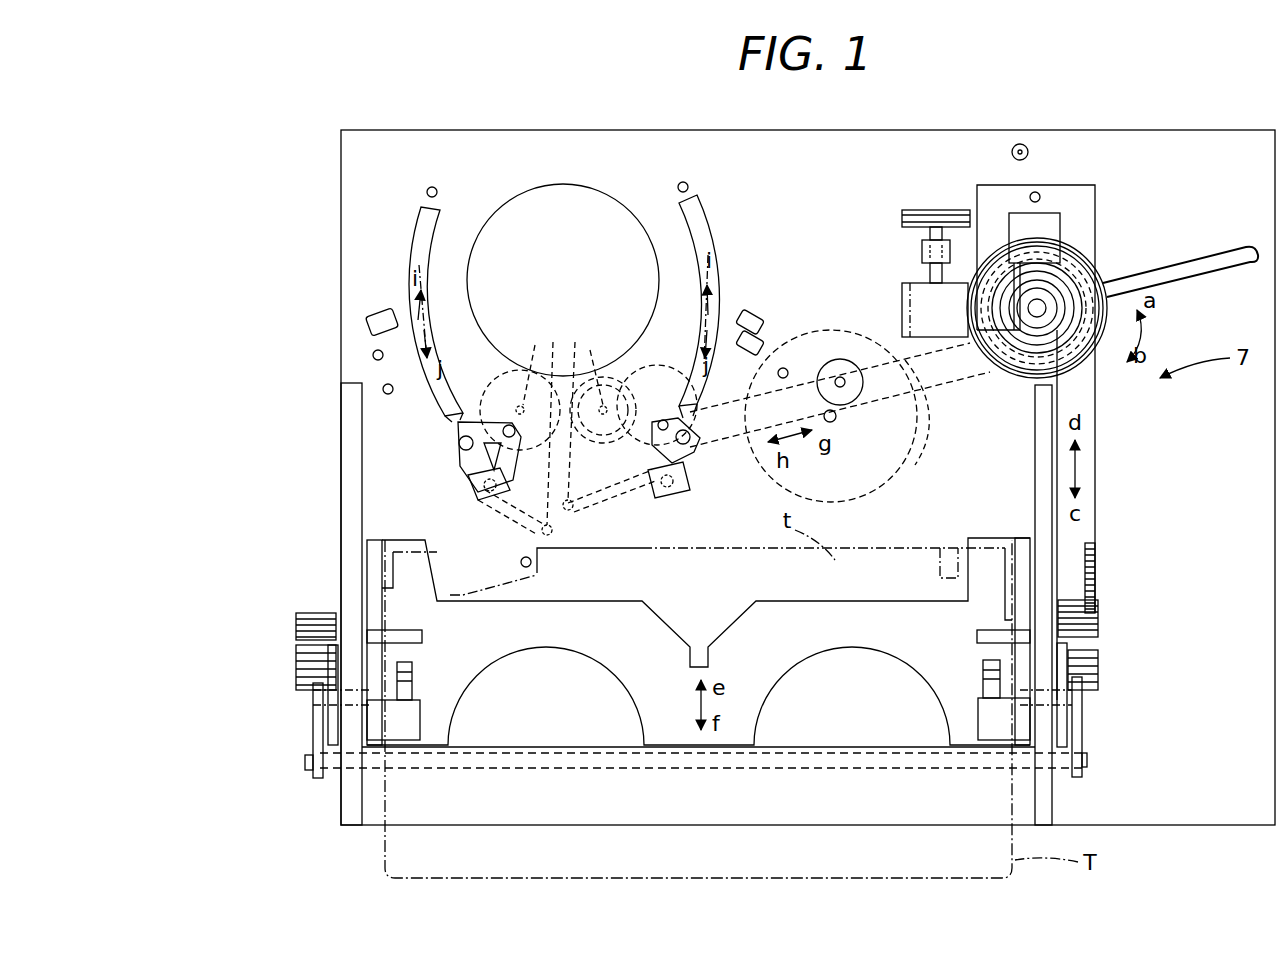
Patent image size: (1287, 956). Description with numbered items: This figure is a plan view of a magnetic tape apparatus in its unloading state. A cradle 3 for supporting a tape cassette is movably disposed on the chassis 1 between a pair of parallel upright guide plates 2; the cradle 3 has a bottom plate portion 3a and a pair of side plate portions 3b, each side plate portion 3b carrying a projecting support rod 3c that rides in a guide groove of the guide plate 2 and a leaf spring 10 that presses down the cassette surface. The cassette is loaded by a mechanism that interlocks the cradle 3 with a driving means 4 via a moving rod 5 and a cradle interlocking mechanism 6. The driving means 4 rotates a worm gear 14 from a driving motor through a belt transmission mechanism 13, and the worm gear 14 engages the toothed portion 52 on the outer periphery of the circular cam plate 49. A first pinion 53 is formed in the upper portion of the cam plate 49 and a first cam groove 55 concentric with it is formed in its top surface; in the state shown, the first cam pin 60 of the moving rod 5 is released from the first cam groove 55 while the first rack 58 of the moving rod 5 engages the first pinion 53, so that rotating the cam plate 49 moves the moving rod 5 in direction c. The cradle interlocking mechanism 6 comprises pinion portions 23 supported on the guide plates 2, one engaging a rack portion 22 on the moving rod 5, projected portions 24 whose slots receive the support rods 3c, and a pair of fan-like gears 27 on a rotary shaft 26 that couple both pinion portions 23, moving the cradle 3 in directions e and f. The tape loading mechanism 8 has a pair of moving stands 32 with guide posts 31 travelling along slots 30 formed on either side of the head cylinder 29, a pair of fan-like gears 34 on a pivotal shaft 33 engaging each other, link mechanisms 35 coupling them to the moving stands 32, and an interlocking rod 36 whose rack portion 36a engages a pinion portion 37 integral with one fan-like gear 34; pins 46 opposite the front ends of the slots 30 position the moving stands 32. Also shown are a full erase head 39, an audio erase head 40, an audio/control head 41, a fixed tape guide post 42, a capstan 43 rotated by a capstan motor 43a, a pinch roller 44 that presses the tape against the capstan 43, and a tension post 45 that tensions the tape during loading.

The chassis 1 is at (341, 195).
The guide plates 2 is at (341, 410).
The cradle 3 is at (670, 750).
The bottom plate portion 3a is at (738, 735).
The side plate portions 3b is at (370, 550).
The support rod 3c is at (330, 700).
The driving means 4 is at (1160, 200).
The moving rod 5 is at (1095, 470).
The cradle interlocking mechanism 6 is at (1110, 635).
The tape loading mechanism 8 is at (410, 190).
The leaf spring 10 is at (406, 685).
The belt transmission mechanism 13 is at (940, 210).
The worm gear 14 is at (902, 300).
The rack portion 22 is at (1092, 552).
The pinion portions 23 is at (296, 625).
The projected portions 24 is at (300, 660).
The rotary shaft 26 is at (860, 765).
The fan-like gears 27 is at (315, 750).
The head cylinder 29 is at (597, 200).
The slots 30 is at (416, 232).
The guide posts 31 is at (458, 455).
The moving stands 32 is at (470, 485).
The pivotal shaft 33 is at (555, 345).
The fan-like gears 34 is at (484, 375).
The link mechanisms 35 is at (500, 518).
The interlocking rod 36 is at (930, 468).
The rack portion 36a is at (657, 400).
The pinion portion 37 is at (640, 362).
The full erase head 39 is at (370, 318).
The audio erase head 40 is at (752, 318).
The audio/control head 41 is at (760, 343).
The fixed tape guide post 42 is at (384, 386).
The capstan 43 is at (833, 422).
The capstan motor 43a is at (880, 470).
The pinch roller 44 is at (840, 372).
The tension post 45 is at (531, 564).
The pins 46 is at (436, 189).
The circular cam plate 49 is at (1055, 320).
The toothed portion 52 is at (978, 360).
The first pinion 53 is at (1005, 345).
The first cam groove 55 is at (1023, 340).
The first rack 58 is at (1045, 258).
The first cam pin 60 is at (1038, 194).